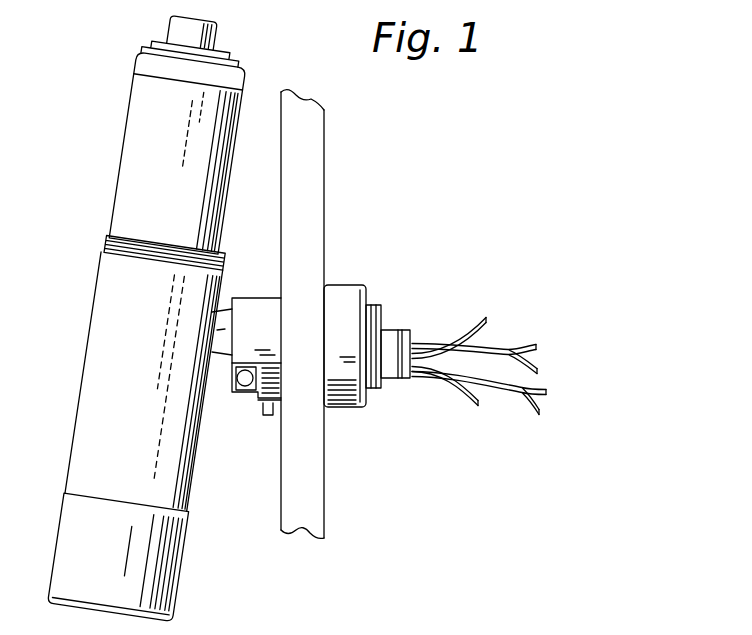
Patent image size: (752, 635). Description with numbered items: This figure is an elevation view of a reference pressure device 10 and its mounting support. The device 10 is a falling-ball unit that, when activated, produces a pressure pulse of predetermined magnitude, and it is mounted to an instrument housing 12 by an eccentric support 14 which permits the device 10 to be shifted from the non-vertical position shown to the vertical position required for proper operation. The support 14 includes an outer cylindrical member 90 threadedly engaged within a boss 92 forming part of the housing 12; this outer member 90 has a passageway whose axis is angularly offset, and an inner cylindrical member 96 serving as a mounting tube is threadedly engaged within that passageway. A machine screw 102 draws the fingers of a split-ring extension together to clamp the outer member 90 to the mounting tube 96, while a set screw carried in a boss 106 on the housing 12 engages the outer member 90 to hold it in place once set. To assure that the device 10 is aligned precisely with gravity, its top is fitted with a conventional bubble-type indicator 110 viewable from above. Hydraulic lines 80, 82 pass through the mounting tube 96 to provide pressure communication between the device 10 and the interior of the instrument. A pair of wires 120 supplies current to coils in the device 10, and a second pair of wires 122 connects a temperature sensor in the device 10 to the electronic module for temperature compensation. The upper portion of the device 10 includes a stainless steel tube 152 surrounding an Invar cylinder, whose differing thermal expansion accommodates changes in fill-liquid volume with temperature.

The reference pressure device 10 is at (86, 259).
The instrument housing 12 is at (318, 157).
The eccentric support 14 is at (258, 288).
The hydraulic line 80 is at (474, 330).
The hydraulic line 82 is at (468, 402).
The outer cylindrical member 90 is at (383, 322).
The boss 92 is at (344, 291).
The inner cylindrical member 96 is at (399, 379).
The machine screw 102 is at (238, 385).
The boss 106 is at (259, 403).
The bubble-type indicator 110 is at (214, 36).
The pair of wires 120 is at (522, 421).
The second pair of wires 122 is at (531, 336).
The stainless steel tube 152 is at (128, 121).